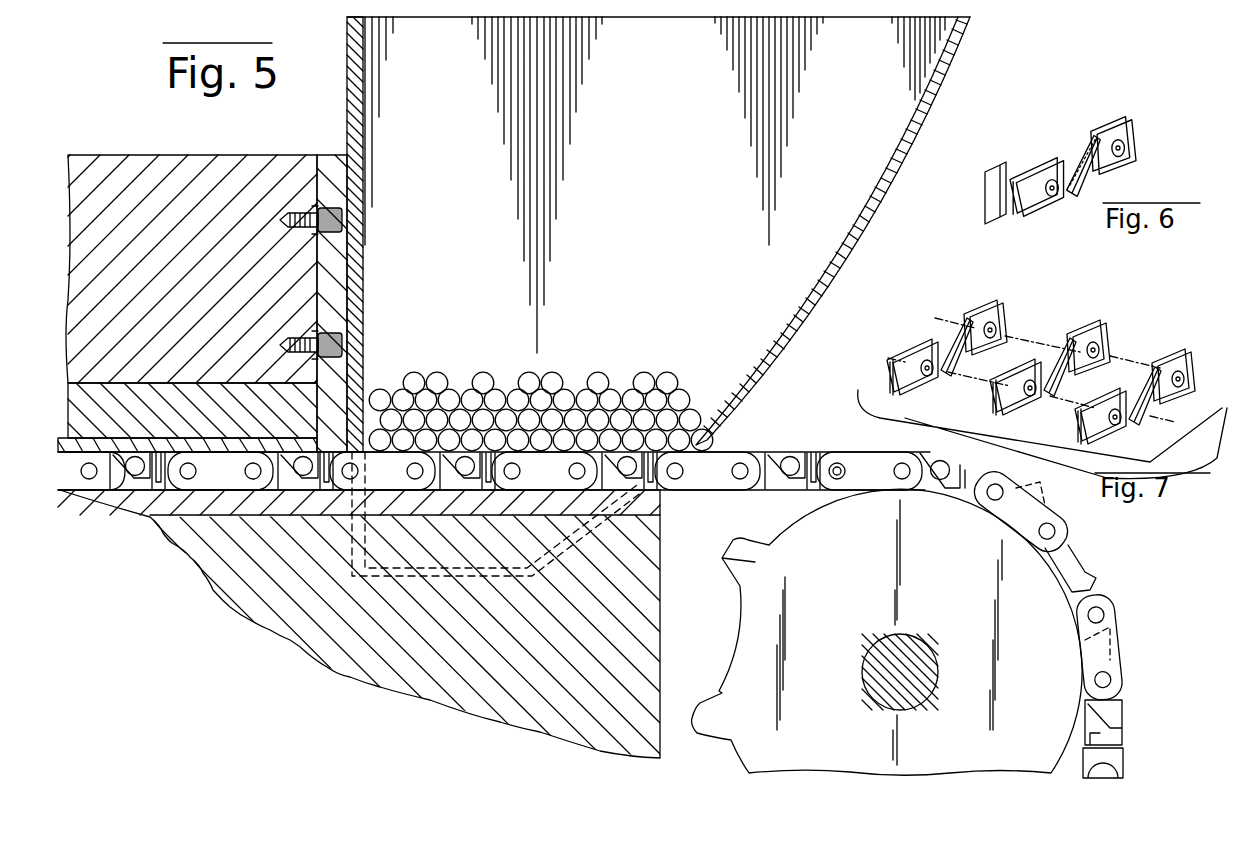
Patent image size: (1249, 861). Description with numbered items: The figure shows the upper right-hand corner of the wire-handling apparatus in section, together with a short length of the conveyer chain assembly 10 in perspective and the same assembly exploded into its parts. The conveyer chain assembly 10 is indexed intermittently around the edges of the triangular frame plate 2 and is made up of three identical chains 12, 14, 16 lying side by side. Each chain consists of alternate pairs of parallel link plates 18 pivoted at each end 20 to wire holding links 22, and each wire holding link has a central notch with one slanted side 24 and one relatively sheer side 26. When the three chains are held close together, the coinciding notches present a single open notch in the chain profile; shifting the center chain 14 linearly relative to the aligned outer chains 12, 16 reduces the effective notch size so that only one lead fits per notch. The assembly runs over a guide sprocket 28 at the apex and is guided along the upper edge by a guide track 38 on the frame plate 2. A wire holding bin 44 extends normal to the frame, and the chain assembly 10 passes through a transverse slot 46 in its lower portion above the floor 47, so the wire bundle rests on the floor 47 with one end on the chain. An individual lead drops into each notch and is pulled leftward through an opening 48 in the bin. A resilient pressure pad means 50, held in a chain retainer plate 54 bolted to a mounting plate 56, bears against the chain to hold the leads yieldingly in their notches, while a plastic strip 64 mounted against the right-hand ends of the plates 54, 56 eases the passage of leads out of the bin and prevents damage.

In FIG. 5, the frame plate 2 is at (290, 638).
In FIG. 5, the conveyer chain assembly 10 is at (626, 599).
In FIG. 6, the conveyer chain assembly 10 is at (1070, 149).
In FIG. 7, the conveyer chain assembly 10 is at (1033, 362).
In FIG. 7, the chain 12 is at (947, 347).
In FIG. 7, the center chain 14 is at (1050, 367).
In FIG. 7, the chain 16 is at (1135, 396).
In FIG. 5, the link plates 18 is at (876, 462).
In FIG. 6, the link plates 18 is at (995, 210).
In FIG. 7, the link plates 18 is at (890, 375).
In FIG. 5, the end 20 is at (837, 466).
In FIG. 6, the end 20 is at (1052, 198).
In FIG. 7, the end 20 is at (990, 322).
In FIG. 5, the wire holding links 22 is at (805, 458).
In FIG. 6, the wire holding links 22 is at (1086, 185).
In FIG. 7, the wire holding links 22 is at (965, 350).
In FIG. 5, the slanted side 24 is at (290, 472).
In FIG. 7, the slanted side 24 is at (1080, 372).
In FIG. 5, the sheer side 26 is at (331, 472).
In FIG. 7, the sheer side 26 is at (930, 336).
In FIG. 5, the guide sprocket 28 is at (748, 640).
In FIG. 5, the guide track 38 is at (668, 510).
In FIG. 5, the wire holding bin 44 is at (912, 148).
In FIG. 5, the transverse slot 46 is at (692, 447).
In FIG. 5, the floor 47 is at (430, 580).
In FIG. 5, the opening 48 is at (363, 307).
In FIG. 5, the resilient pressure pad means 50 is at (236, 440).
In FIG. 5, the chain retainer plate 54 is at (160, 385).
In FIG. 5, the mounting plate 56 is at (246, 158).
In FIG. 5, the plastic strip 64 is at (344, 246).